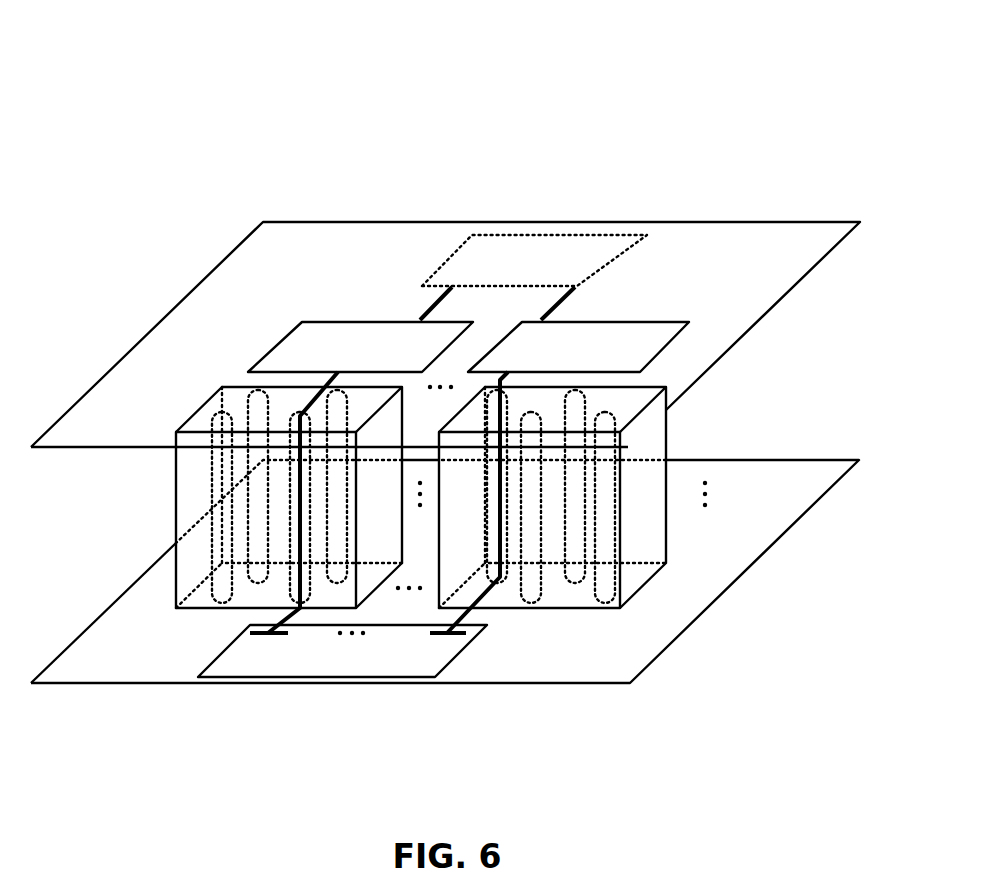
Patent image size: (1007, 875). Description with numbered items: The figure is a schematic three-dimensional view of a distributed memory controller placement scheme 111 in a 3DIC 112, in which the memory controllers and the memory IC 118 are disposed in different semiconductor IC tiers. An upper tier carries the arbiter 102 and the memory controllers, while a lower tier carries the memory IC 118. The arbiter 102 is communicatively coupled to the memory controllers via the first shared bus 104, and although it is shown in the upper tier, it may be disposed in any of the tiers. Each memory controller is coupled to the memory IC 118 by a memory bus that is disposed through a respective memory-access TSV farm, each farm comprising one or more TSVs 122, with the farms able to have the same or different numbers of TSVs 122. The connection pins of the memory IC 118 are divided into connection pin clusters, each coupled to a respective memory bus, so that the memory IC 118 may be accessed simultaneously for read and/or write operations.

The distributed memory controller placement scheme 111 is at (203, 110).
The 3DIC 112 is at (685, 90).
The arbiter 102 is at (560, 234).
The first shared bus 104 is at (433, 308).
The TSV 122 is at (210, 478).
The memory IC 118 is at (312, 677).